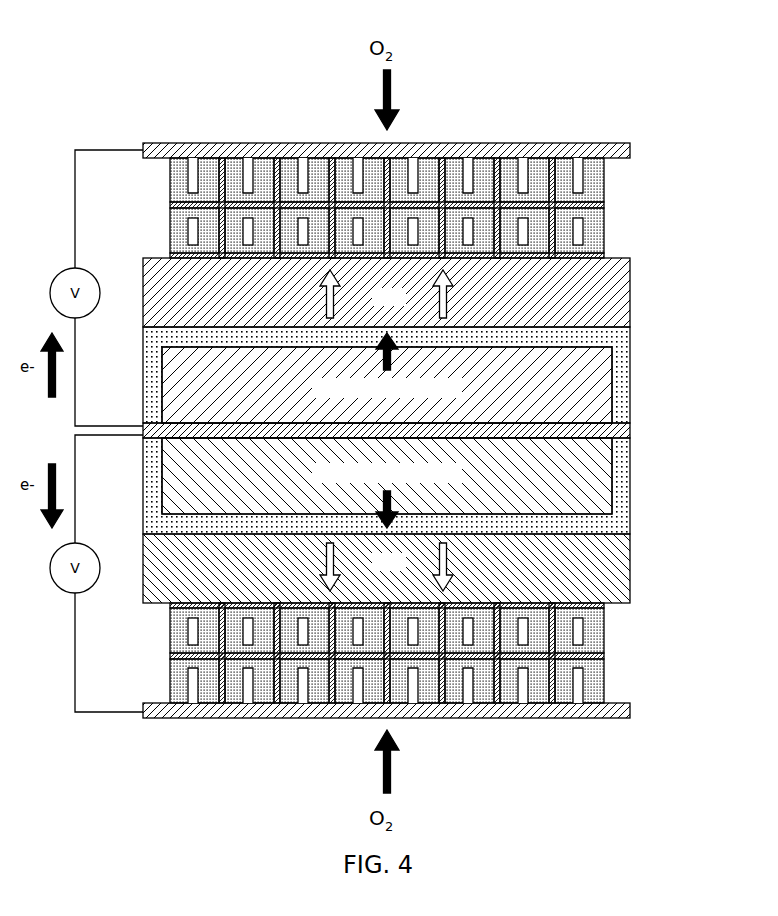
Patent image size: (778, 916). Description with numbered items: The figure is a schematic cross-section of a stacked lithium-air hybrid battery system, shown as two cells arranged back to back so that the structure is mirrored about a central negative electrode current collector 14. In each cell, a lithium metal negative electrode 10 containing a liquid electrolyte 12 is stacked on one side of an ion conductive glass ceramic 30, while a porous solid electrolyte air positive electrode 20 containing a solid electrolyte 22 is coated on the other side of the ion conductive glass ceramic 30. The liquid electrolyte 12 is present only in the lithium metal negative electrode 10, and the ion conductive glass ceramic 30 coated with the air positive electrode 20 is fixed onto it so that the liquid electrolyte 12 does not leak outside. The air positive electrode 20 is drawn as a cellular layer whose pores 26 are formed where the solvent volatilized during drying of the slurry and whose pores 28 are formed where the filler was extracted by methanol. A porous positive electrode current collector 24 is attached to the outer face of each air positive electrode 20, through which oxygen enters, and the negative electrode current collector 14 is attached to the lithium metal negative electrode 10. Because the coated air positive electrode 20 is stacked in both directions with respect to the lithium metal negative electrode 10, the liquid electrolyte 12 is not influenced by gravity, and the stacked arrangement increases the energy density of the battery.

The lithium metal negative electrode 10 is at (615, 352).
The liquid electrolyte 12 is at (625, 378).
The negative electrode current collector 14 is at (625, 430).
The porous solid electrolyte air positive electrode 20 is at (379, 430).
The solid electrolyte 22 is at (180, 238).
The positive electrode current collector 24 is at (555, 143).
The pores 26 is at (193, 183).
The pores 28 is at (145, 182).
The ion conductive glass ceramic 30 is at (625, 293).